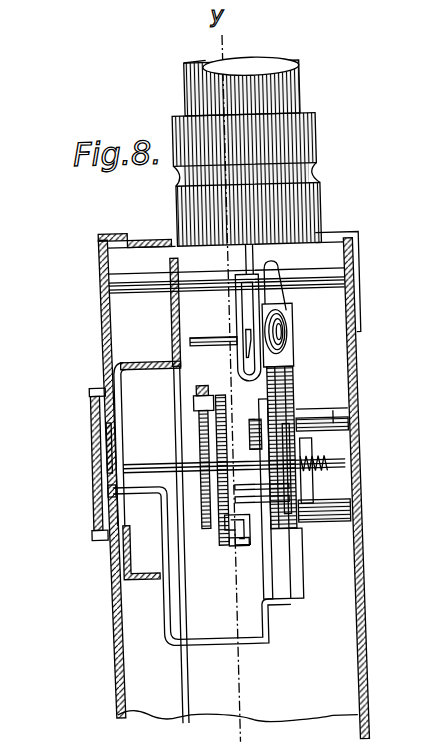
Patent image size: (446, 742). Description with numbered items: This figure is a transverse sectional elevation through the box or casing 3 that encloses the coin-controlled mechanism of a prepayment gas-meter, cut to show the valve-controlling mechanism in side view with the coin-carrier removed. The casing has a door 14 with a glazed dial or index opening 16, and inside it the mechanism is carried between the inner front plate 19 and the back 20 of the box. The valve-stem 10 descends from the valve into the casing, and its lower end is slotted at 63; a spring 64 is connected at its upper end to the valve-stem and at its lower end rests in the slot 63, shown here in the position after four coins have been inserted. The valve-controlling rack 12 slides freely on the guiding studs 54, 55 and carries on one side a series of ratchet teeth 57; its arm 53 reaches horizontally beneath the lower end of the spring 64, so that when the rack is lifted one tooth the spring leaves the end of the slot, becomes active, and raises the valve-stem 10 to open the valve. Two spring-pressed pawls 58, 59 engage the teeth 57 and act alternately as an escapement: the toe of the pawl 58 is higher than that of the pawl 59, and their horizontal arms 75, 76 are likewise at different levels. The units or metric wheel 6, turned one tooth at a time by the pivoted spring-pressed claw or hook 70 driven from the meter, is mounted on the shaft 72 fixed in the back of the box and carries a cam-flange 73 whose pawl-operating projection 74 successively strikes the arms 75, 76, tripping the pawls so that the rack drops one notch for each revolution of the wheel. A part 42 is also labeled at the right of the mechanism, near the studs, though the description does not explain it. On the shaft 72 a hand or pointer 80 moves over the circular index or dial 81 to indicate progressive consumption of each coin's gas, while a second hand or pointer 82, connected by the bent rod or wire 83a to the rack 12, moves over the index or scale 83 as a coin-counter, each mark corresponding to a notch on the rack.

The box or casing 3 is at (237, 476).
The units or metric wheel 6 is at (199, 469).
The valve-stem 10 is at (265, 258).
The valve-controlling rack 12 is at (297, 498).
The door 14 is at (92, 320).
The glazed dial or index opening 16 is at (121, 475).
The inner front plate 19 is at (172, 490).
The back 20 is at (346, 598).
The rod 42 is at (337, 467).
The arm 53 is at (224, 337).
The stud 54 is at (342, 421).
The stud 55 is at (342, 510).
The ratchet teeth 57 is at (285, 400).
The pawl 58 is at (247, 450).
The pawl 59 is at (290, 497).
The slot 63 is at (229, 300).
The spring 64 is at (285, 303).
The spring-pressed claw or hook 70 is at (210, 388).
The shaft 72 is at (167, 462).
The cam-flange 73 is at (218, 412).
The pawl-operating projection 74 is at (246, 548).
The horizontal arm 75 is at (262, 492).
The horizontal arm 76 is at (243, 527).
The hand or pointer 80 is at (83, 437).
The circular index or dial 81 is at (149, 443).
The hand or pointer 82 is at (96, 490).
The index or scale 83 is at (96, 472).
The bent rod or wire 83a is at (202, 565).